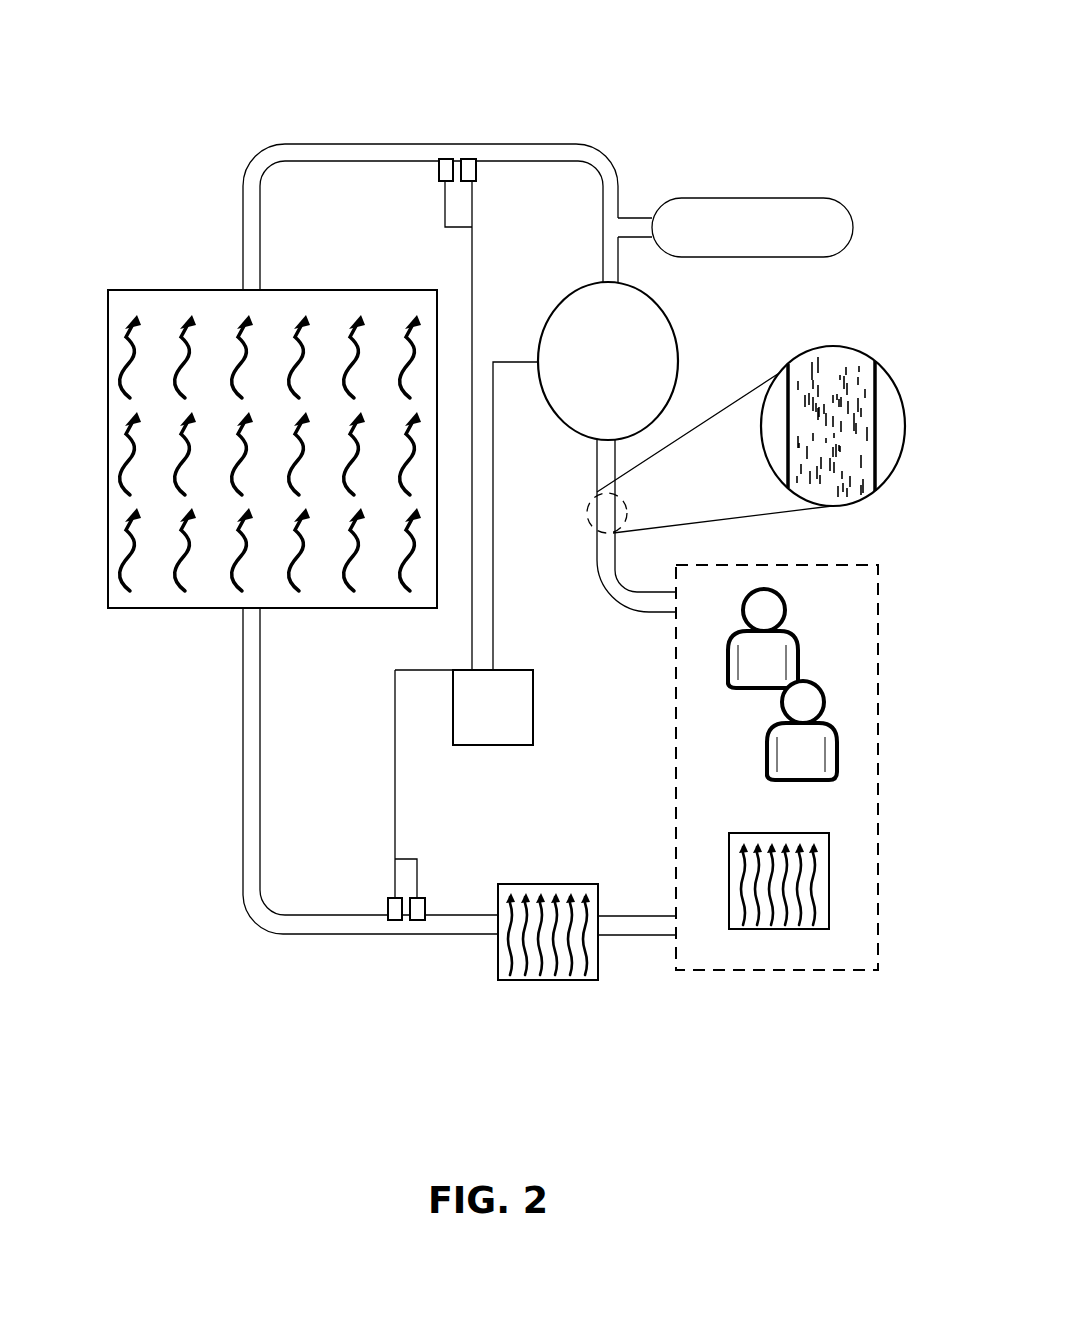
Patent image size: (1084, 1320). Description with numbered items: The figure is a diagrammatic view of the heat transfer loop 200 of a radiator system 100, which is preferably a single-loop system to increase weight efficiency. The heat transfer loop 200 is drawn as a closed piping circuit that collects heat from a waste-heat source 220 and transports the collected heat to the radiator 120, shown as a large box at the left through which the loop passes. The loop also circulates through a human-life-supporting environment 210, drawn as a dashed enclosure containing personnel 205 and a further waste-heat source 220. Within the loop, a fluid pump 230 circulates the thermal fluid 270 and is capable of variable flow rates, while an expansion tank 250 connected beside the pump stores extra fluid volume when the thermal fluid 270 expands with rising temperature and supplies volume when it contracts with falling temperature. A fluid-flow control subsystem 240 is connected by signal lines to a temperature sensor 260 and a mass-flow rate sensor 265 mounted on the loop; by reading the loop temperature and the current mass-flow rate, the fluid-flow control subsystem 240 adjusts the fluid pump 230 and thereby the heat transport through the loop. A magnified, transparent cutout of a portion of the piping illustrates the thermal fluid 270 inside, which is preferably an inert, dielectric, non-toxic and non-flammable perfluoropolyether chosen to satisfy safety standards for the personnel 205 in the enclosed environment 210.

The radiator system 100 is at (178, 36).
The radiator 120 is at (186, 290).
The heat transfer loop 200 is at (269, 120).
The personnel 205 is at (786, 622).
The human-life-supporting environment 210 is at (738, 972).
The waste-heat source 220 is at (498, 965).
The fluid pump 230 is at (677, 350).
The fluid-flow control subsystem 240 is at (533, 717).
The expansion tank 250 is at (795, 257).
The temperature sensor 260 is at (439, 170).
The mass-flow rate sensor 265 is at (476, 170).
The thermal fluid 270 is at (790, 448).